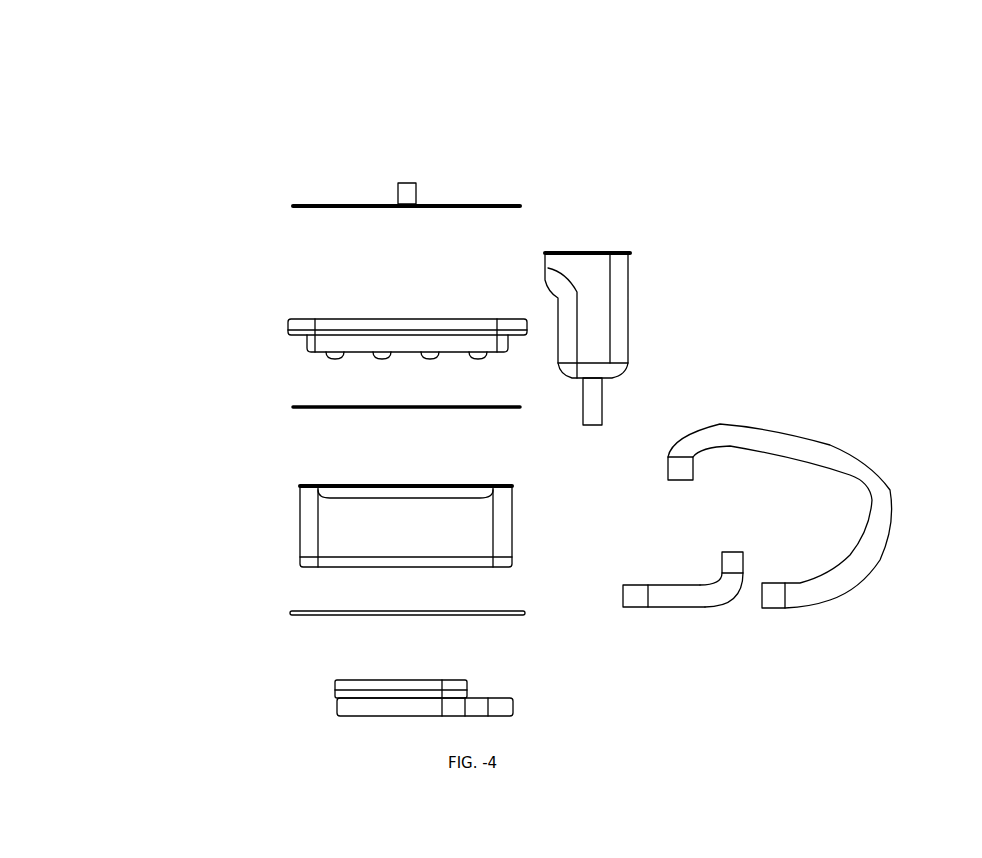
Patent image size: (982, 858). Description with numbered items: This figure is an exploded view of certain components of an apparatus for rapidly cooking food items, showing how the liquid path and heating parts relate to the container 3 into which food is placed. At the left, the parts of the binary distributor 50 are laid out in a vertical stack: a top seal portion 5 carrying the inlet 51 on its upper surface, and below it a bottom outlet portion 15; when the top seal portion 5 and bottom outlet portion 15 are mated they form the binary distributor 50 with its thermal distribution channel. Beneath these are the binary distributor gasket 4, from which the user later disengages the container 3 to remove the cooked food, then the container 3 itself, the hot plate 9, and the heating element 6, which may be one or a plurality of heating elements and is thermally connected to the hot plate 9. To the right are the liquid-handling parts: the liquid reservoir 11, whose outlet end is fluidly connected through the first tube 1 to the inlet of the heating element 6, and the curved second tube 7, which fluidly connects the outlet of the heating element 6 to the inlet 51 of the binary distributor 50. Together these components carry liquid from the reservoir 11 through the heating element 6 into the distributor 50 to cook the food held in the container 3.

The binary distributor 50 is at (137, 20).
The top seal portion 5 is at (300, 202).
The inlet 51 is at (413, 175).
The bottom outlet portion 15 is at (300, 318).
The binary distributor gasket 4 is at (302, 405).
The container 3 is at (299, 519).
The hot plate 9 is at (289, 611).
The heating element 6 is at (333, 685).
The liquid reservoir 11 is at (581, 248).
The first tube 1 is at (632, 582).
The second tube 7 is at (770, 425).